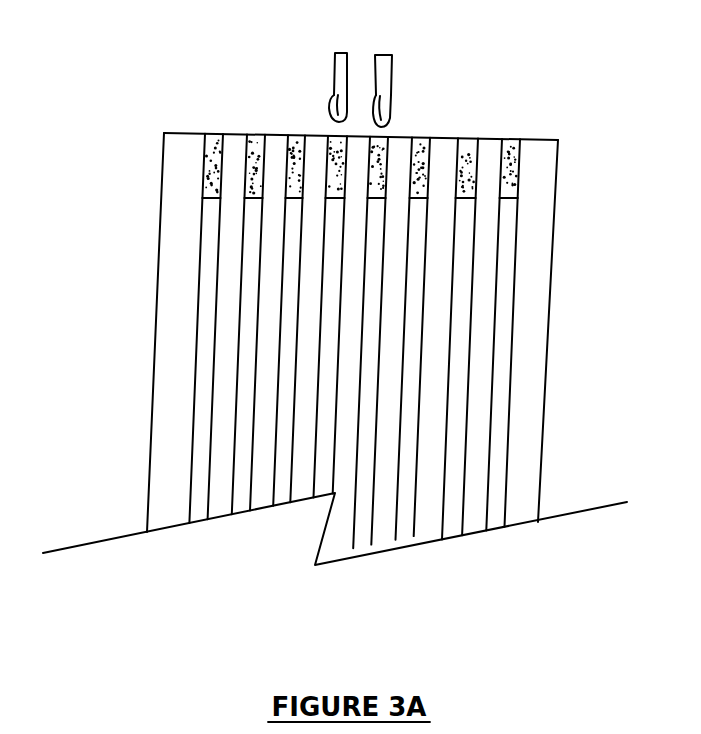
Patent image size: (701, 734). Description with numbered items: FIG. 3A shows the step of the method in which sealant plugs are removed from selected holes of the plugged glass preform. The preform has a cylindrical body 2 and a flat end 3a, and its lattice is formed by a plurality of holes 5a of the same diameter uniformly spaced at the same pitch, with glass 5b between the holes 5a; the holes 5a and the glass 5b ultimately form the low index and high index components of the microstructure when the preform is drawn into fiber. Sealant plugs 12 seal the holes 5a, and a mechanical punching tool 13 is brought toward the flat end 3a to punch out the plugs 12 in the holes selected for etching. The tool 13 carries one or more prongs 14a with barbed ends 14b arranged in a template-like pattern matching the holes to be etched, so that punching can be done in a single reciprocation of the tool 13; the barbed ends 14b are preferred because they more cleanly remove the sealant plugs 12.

The cylindrical body 2 is at (167, 235).
The flat end 3a is at (536, 138).
The holes 5a is at (250, 297).
The glass between the holes 5b is at (445, 137).
The sealant plugs 12 is at (259, 135).
The mechanical punching tool 13 is at (351, 76).
The prongs 14a is at (351, 88).
The barbed ends 14b is at (333, 108).